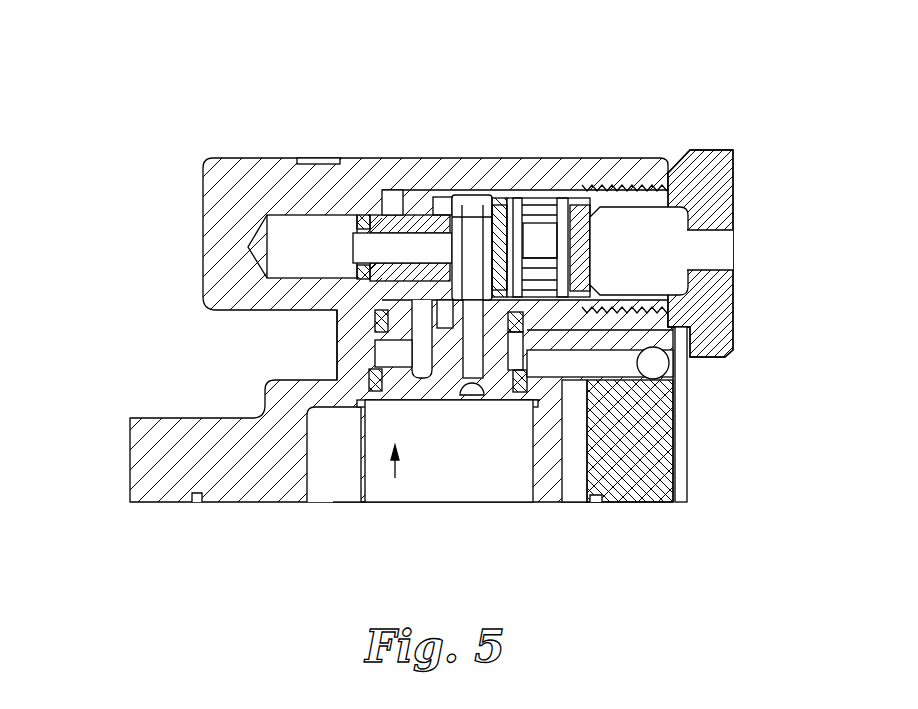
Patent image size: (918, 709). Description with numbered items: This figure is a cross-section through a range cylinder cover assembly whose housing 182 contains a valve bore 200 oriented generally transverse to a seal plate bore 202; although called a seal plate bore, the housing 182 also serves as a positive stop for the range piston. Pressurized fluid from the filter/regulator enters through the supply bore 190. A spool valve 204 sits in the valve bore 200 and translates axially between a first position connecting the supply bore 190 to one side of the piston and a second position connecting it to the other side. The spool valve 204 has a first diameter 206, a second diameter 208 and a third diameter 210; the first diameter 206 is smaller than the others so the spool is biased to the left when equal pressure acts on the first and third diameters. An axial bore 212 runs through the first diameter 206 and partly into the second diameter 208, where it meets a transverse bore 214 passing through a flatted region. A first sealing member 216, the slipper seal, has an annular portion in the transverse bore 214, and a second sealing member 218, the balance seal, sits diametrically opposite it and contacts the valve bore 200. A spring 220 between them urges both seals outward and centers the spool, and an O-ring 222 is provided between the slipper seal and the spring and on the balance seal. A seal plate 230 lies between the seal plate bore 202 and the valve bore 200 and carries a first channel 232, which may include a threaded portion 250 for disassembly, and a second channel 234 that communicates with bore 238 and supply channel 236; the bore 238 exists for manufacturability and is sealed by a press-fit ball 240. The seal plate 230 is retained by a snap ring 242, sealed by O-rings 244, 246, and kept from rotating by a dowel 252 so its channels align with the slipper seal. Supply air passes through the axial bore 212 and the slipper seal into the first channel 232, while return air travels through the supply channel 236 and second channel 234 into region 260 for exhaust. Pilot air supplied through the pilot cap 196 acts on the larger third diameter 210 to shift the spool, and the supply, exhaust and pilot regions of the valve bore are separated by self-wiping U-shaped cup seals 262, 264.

The housing 182 is at (585, 188).
The supply bore 190 is at (300, 157).
The pilot cap 196 is at (705, 150).
The valve bore 200 is at (283, 241).
The seal plate bore 202 is at (392, 503).
The spool valve 204 is at (393, 183).
The first diameter 206 is at (412, 228).
The second diameter 208 is at (440, 170).
The third diameter 210 is at (560, 200).
The axial bore 212 is at (350, 252).
The transverse bore 214 is at (520, 174).
The first sealing member 216 is at (545, 395).
The second sealing member 218 is at (478, 225).
The spring 220 is at (337, 311).
The O-ring 222 is at (500, 205).
The seal plate 230 is at (432, 405).
The first channel 232 is at (484, 395).
The second channel 234 is at (400, 352).
The supply channel 236 is at (592, 430).
The bore 238 is at (600, 370).
The ball 240 is at (655, 363).
The snap ring 242 is at (333, 503).
The O-ring 244 is at (590, 385).
The O-ring 246 is at (523, 328).
The threaded portion 250 is at (465, 383).
The dowel 252 is at (372, 386).
The region 260 is at (362, 265).
The cup seal 262 is at (358, 214).
The cup seal 264 is at (600, 198).